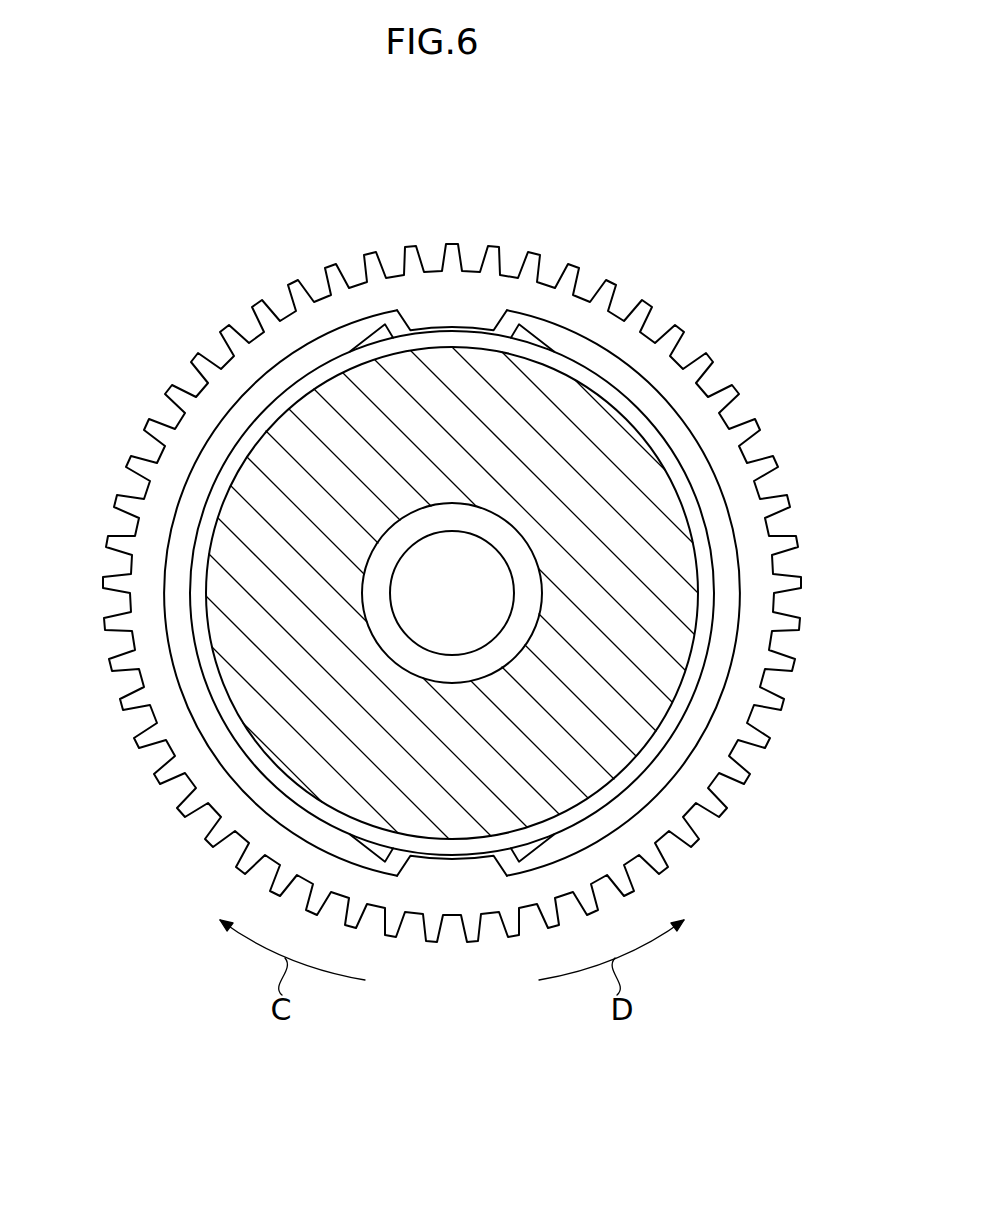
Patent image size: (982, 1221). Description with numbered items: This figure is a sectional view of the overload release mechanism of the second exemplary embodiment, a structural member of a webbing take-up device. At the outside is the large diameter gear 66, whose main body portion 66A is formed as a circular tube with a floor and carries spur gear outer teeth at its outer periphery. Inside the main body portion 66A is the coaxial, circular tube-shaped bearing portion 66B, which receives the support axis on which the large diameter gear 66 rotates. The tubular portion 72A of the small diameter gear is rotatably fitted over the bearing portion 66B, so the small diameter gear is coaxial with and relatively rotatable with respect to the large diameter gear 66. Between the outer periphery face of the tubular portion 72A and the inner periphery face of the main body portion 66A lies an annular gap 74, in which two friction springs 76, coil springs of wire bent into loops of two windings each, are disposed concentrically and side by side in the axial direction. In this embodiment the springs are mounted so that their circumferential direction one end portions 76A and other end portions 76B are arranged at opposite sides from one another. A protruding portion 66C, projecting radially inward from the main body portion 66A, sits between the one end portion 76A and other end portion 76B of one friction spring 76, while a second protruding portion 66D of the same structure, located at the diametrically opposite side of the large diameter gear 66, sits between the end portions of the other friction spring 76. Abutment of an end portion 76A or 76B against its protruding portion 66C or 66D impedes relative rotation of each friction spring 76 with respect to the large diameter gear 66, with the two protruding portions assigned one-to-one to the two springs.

The large diameter gear 66 is at (501, 603).
The main body portion 66A is at (789, 708).
The bearing portion 66B is at (521, 563).
The protruding portion 66C is at (452, 318).
The protruding portion 66D is at (448, 868).
The tubular portion 72A is at (275, 688).
The annular gap 74 is at (677, 760).
The friction spring 76 is at (405, 563).
The circumferential direction one end portion 76A is at (528, 335).
The circumferential direction other end portion 76B is at (373, 327).